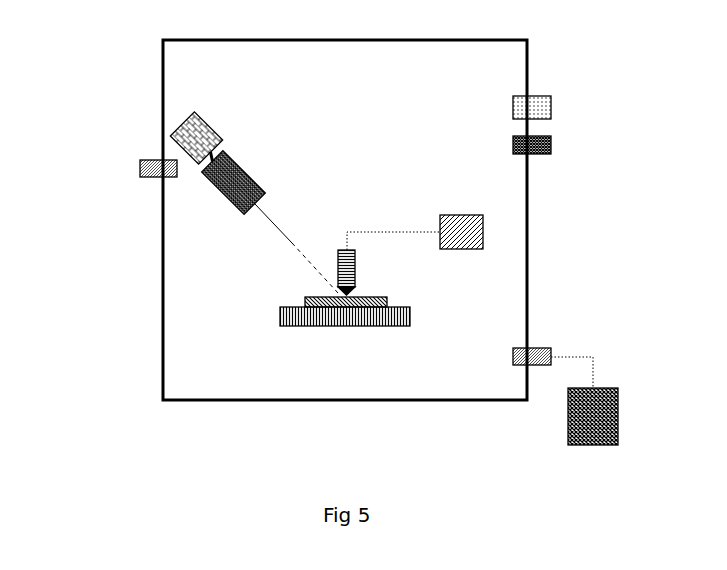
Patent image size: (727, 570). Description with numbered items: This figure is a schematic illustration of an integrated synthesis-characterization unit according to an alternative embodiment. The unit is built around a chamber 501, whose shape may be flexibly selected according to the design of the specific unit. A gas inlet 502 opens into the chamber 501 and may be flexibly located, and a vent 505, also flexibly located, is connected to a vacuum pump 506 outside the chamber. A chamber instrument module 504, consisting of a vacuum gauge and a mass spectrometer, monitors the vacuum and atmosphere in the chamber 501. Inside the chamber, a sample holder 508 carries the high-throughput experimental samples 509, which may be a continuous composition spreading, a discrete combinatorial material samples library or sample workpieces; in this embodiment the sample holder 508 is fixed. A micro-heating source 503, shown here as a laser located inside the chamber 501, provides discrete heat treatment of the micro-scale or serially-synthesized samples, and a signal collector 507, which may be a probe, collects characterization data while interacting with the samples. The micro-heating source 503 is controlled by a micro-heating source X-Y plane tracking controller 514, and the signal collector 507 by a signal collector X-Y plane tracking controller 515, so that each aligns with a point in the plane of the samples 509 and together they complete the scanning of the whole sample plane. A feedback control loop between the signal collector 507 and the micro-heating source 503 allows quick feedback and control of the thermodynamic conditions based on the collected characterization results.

The chamber 501 is at (163, 235).
The gas inlet 502 is at (140, 172).
The micro-heating source 503 is at (219, 142).
The chamber instrument module 504 is at (551, 147).
The vent 505 is at (533, 348).
The vacuum pump 506 is at (600, 388).
The signal collector 507 is at (355, 277).
The sample holder 508 is at (317, 327).
The high-throughput experimental samples 509 is at (305, 297).
The micro-heating source X-Y plane tracking controller 514 is at (188, 124).
The signal collector X-Y plane tracking controller 515 is at (483, 232).